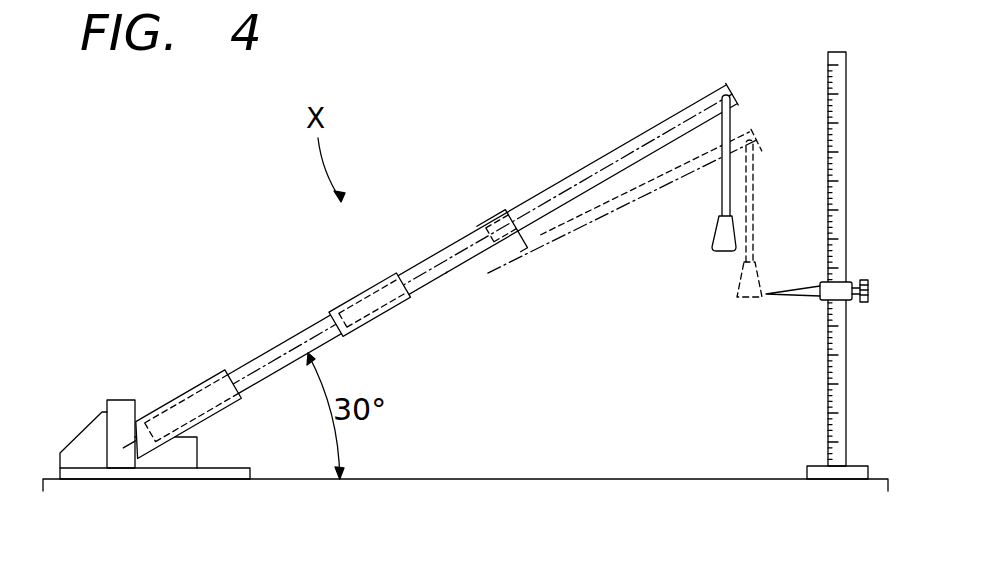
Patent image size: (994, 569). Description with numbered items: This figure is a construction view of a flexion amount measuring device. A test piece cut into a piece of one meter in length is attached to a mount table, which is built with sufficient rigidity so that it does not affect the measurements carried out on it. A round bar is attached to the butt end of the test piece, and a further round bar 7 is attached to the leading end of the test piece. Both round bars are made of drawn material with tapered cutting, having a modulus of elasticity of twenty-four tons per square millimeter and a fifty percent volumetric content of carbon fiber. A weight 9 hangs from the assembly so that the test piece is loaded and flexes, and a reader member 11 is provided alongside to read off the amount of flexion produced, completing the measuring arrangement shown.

The further round bar 7 is at (652, 170).
The weight 9 is at (766, 294).
The reader member 11 is at (823, 301).